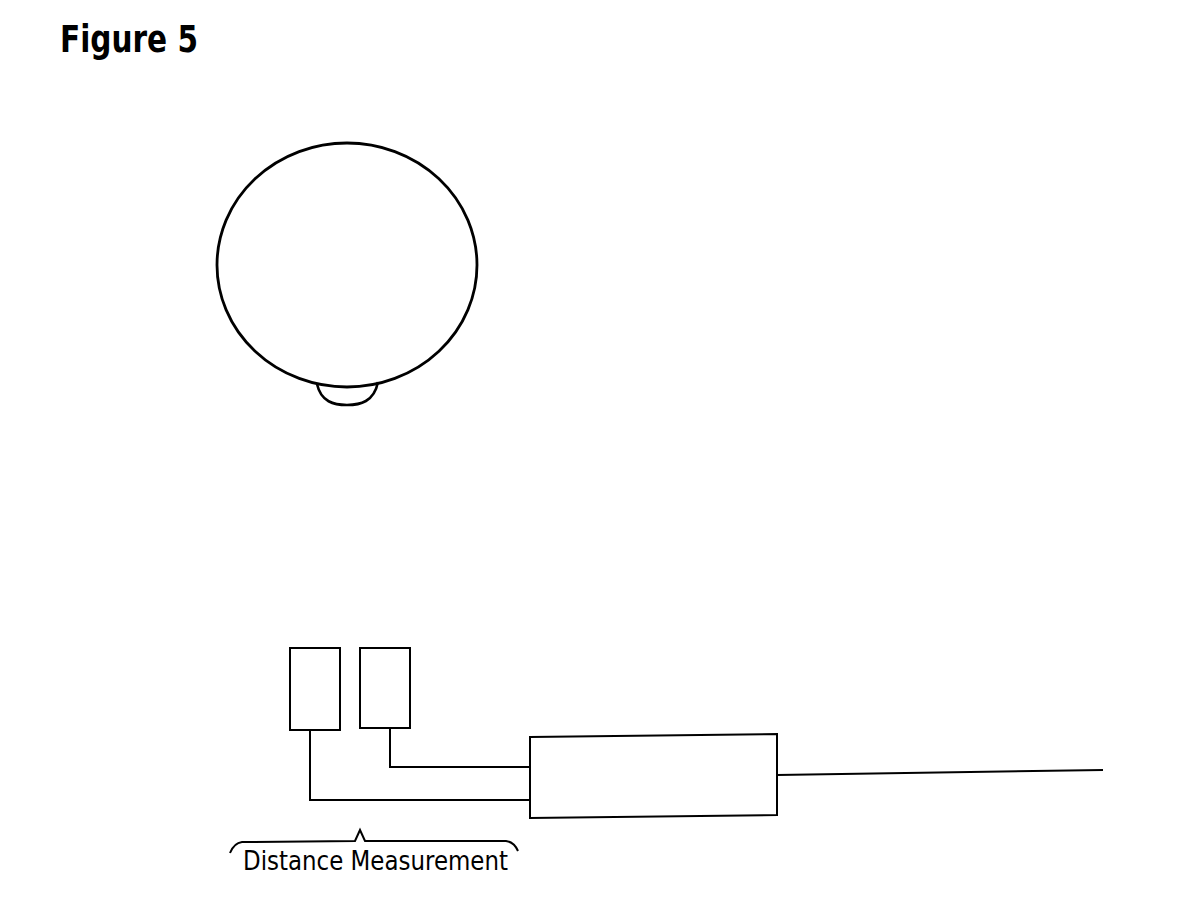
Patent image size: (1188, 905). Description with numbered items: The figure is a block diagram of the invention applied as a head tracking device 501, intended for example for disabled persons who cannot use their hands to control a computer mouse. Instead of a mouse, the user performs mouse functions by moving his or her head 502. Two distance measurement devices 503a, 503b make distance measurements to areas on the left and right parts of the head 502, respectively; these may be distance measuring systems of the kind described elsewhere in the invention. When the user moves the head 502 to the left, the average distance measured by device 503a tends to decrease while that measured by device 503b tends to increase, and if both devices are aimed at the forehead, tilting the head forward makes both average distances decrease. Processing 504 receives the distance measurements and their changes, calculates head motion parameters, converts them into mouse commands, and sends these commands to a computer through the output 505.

The head tracking device 501 is at (792, 270).
The head 502 is at (468, 220).
The distance measurement device 503a is at (290, 692).
The distance measurement device 503b is at (410, 697).
The processing 504 is at (590, 735).
The output 505 is at (867, 772).